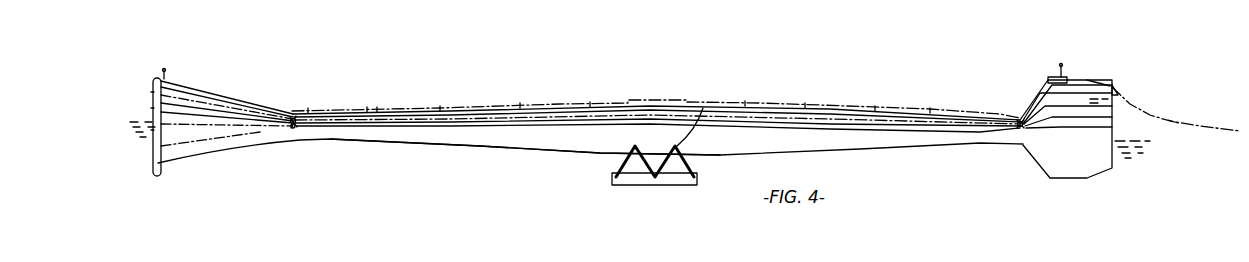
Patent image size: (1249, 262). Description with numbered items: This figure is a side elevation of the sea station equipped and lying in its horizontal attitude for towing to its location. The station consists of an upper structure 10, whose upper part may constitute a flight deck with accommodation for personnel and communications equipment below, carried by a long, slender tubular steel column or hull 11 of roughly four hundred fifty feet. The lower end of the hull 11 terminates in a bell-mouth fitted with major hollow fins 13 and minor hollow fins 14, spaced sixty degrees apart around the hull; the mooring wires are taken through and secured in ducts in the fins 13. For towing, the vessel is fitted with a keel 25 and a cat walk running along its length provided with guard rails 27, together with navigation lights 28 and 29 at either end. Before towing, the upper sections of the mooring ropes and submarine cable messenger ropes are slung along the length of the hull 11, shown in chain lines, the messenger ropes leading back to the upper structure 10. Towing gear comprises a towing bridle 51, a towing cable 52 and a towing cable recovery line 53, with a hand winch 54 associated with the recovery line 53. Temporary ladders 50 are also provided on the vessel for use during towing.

The upper structure 10 is at (1078, 184).
The hull 11 is at (484, 148).
The major hollow fins 13 is at (199, 94).
The minor hollow fins 14 is at (185, 159).
The keel 25 is at (672, 188).
The guard rails 27 is at (538, 107).
The navigation light 28 is at (1063, 65).
The navigation light 29 is at (166, 68).
The temporary ladders 50 is at (293, 128).
The towing bridle 51 is at (1175, 123).
The towing cable 52 is at (1176, 109).
The towing cable recovery line 53 is at (1118, 92).
The hand winch 54 is at (1088, 80).